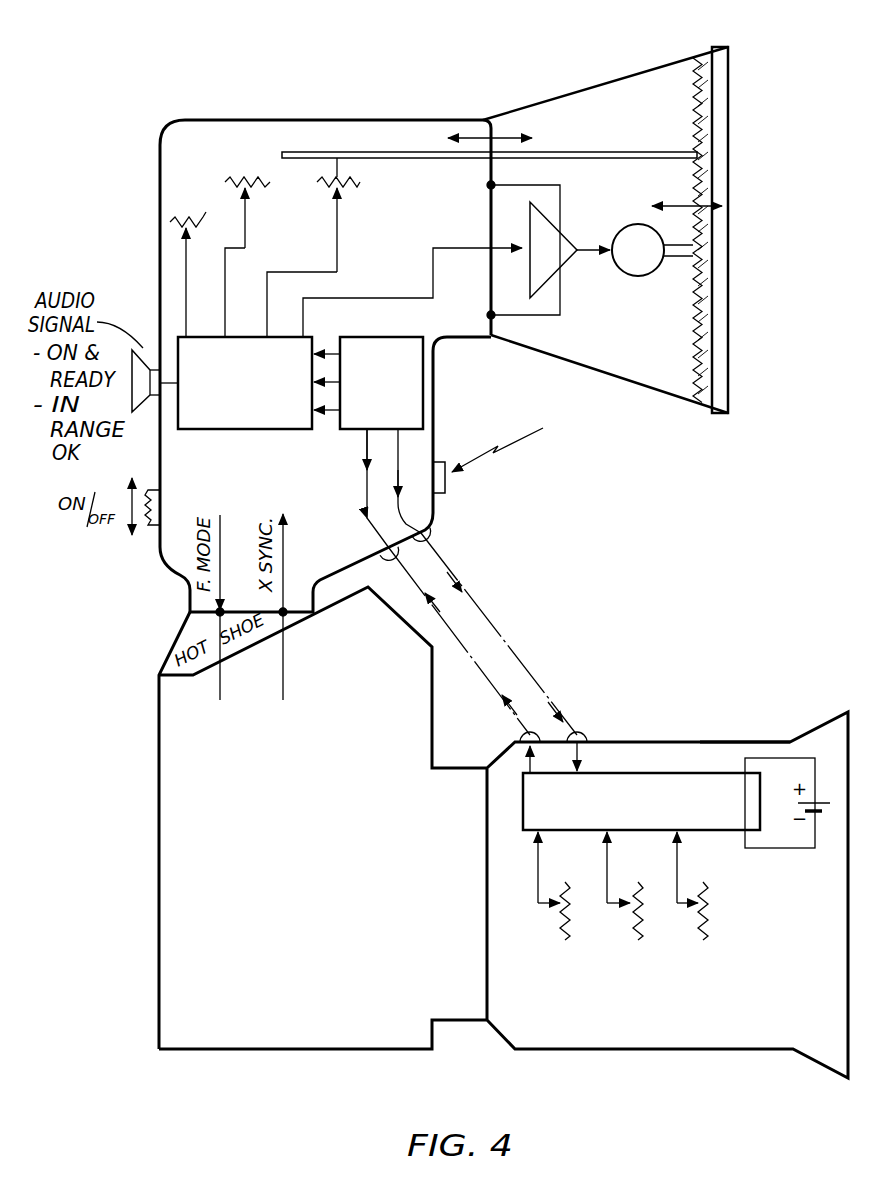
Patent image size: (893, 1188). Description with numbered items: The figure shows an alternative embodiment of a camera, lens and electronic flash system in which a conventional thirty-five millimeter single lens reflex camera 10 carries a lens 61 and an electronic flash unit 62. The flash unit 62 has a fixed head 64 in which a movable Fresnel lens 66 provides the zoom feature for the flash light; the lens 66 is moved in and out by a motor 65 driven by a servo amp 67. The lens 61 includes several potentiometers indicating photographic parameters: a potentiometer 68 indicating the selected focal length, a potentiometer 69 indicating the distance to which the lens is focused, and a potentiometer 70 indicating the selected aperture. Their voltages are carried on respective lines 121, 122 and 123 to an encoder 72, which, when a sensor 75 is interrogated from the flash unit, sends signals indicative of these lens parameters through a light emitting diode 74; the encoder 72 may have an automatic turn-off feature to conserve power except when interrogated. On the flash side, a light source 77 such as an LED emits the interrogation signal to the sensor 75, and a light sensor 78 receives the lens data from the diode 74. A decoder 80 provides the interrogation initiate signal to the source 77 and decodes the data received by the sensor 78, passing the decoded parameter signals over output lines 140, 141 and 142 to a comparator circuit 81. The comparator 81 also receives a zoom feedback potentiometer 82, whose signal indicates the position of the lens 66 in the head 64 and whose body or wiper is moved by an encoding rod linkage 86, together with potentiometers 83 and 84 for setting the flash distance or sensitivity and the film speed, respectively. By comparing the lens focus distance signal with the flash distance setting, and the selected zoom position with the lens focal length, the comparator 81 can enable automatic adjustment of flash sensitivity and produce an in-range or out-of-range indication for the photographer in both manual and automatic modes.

The camera 10 is at (156, 713).
The lens 61 is at (696, 734).
The electronic flash unit 62 is at (157, 174).
The fixed head 64 is at (590, 90).
The motor 65 is at (637, 277).
The Fresnel lens 66 is at (730, 127).
The servo amp 67 is at (575, 258).
The potentiometer 68 is at (705, 900).
The potentiometer 69 is at (635, 935).
The potentiometer 70 is at (560, 925).
The encoder 72 is at (660, 773).
The light emitting diode 74 is at (520, 735).
The sensor 75 is at (585, 735).
The light source 77 is at (432, 533).
The light sensor 78 is at (372, 558).
The decoder 80 is at (423, 382).
The comparator circuit 81 is at (258, 430).
The zoom feedback potentiometer 82 is at (340, 195).
The potentiometer 83 is at (247, 195).
The potentiometer 84 is at (186, 266).
The encoding rod linkage 86 is at (645, 148).
The line 121 is at (538, 862).
The line 122 is at (607, 862).
The line 123 is at (677, 862).
The output line 140 is at (352, 336).
The output line 141 is at (330, 352).
The output line 142 is at (330, 413).